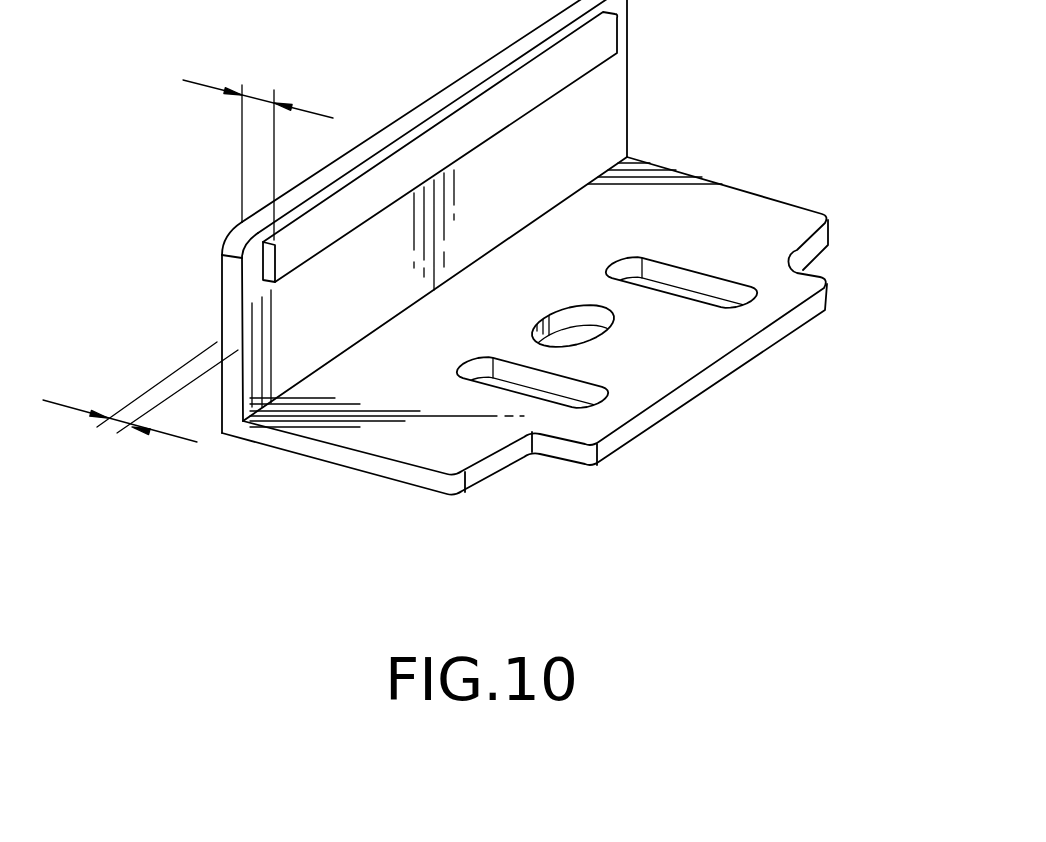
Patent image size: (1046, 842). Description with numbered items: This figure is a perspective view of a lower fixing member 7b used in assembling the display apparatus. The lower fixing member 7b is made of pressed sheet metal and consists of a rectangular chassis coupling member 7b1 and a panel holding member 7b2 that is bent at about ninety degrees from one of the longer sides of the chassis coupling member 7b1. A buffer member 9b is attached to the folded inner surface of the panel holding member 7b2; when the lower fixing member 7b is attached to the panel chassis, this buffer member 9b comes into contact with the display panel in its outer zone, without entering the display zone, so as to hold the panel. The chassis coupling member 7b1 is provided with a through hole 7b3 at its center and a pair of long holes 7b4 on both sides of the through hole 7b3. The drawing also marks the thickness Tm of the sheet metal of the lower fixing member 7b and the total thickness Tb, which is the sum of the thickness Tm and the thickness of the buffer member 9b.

The lower fixing member 7b is at (567, 247).
The chassis coupling member 7b1 is at (567, 314).
The panel holding member 7b2 is at (477, 216).
The through hole 7b3 is at (597, 324).
The long hole 7b4 is at (697, 305).
The buffer member 9b is at (607, 38).
The thickness Tb is at (258, 144).
The thickness of the lower fixing member Tm is at (140, 405).